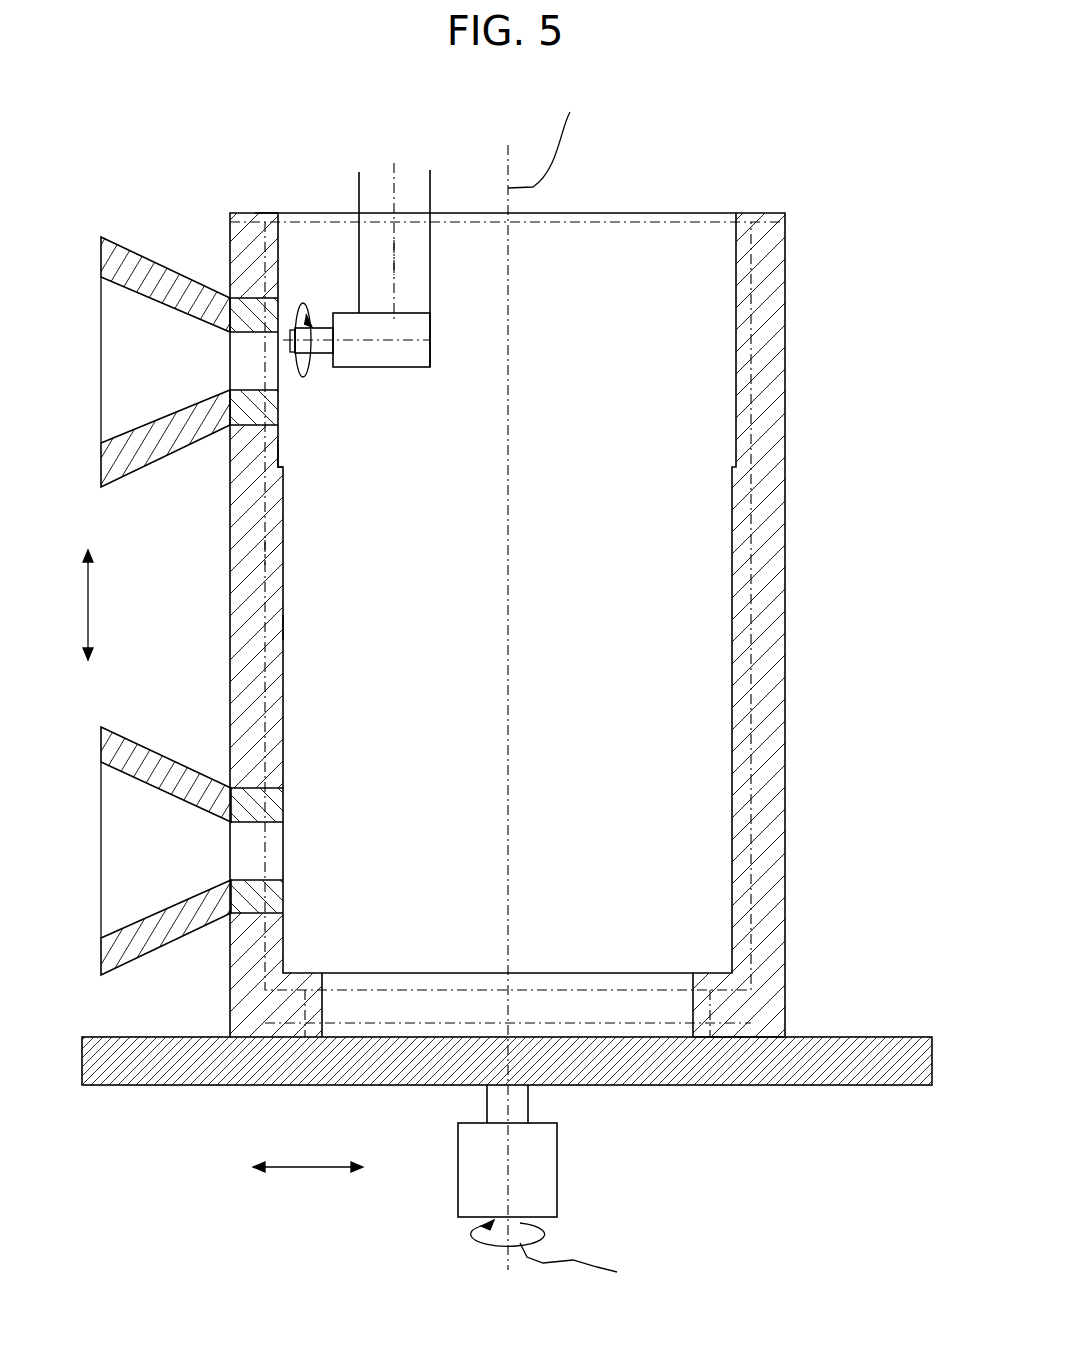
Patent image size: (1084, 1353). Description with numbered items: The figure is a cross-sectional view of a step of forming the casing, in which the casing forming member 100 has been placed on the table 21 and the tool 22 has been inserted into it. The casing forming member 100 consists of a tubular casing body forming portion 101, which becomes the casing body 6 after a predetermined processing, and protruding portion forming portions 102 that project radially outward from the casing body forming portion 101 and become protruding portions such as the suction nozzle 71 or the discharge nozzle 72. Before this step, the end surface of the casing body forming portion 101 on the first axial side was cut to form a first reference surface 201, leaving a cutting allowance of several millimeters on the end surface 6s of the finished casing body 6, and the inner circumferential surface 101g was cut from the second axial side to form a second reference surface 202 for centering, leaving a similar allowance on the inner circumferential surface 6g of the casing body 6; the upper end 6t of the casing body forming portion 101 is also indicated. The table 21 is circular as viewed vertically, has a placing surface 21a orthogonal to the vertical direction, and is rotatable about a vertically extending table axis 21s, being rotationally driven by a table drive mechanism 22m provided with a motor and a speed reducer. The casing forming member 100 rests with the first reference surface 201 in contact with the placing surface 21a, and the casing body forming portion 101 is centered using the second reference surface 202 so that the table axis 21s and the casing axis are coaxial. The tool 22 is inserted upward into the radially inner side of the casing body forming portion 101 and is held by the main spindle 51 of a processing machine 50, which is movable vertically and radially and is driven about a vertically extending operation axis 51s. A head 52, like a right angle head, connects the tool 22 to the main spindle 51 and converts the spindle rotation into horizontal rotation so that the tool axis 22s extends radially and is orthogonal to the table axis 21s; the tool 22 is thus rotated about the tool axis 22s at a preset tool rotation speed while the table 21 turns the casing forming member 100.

The casing forming member 100 is at (542, 676).
The casing body forming portion 101 is at (542, 676).
The casing body 6 is at (760, 523).
The upper end of cup 6t is at (257, 212).
The inner circumferential surface of the casing body 6g is at (265, 552).
The inner circumferential surface of the casing body forming portion 101g is at (283, 627).
The second reference surface 202 is at (278, 443).
The end surface of the casing body 6s is at (753, 1040).
The first reference surface 201 is at (727, 1040).
The protruding portion forming portion 102 is at (542, 676).
The discharge nozzle 72 is at (160, 268).
The suction nozzle 71 is at (172, 777).
The main spindle 51 is at (359, 213).
The processing machine 50 is at (369, 197).
The operation axis 51s is at (394, 258).
The head 52 is at (412, 352).
The tool axis 22s is at (380, 338).
The tool 22 is at (320, 353).
The table 21 is at (542, 676).
The placing surface 21a is at (813, 1037).
The table axis 21s is at (505, 1157).
The table drive mechanism 22m is at (533, 1198).